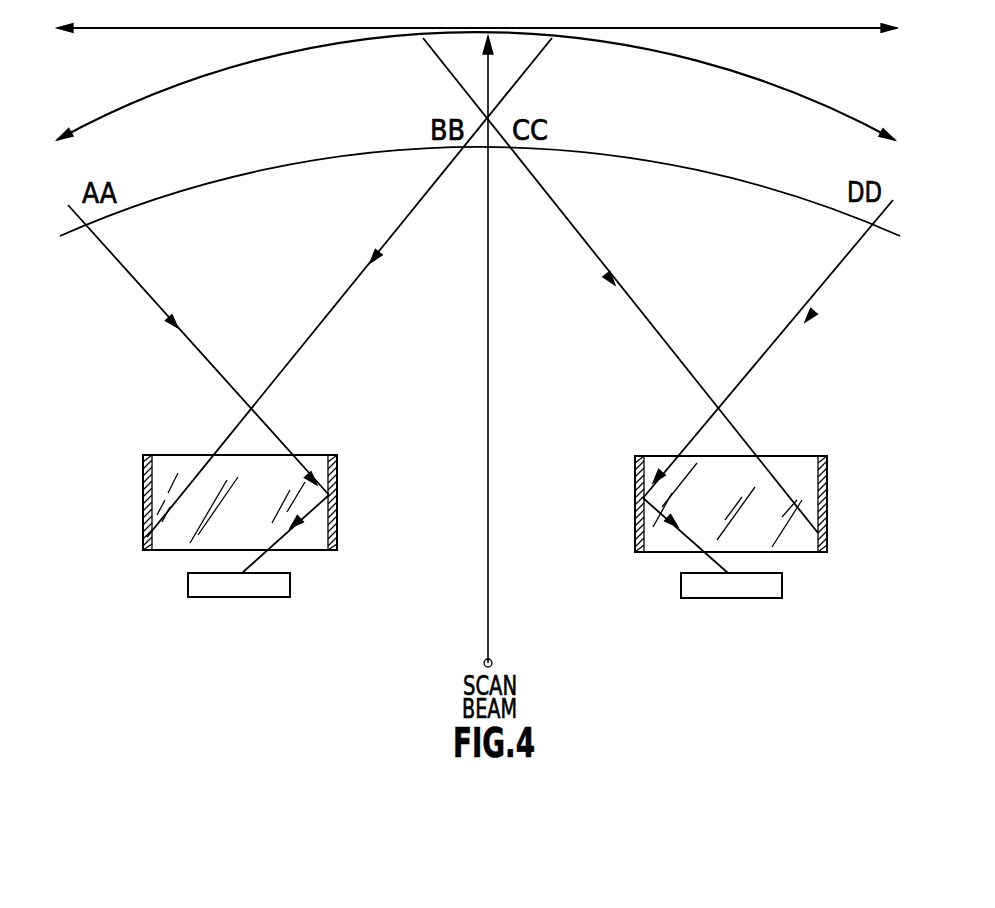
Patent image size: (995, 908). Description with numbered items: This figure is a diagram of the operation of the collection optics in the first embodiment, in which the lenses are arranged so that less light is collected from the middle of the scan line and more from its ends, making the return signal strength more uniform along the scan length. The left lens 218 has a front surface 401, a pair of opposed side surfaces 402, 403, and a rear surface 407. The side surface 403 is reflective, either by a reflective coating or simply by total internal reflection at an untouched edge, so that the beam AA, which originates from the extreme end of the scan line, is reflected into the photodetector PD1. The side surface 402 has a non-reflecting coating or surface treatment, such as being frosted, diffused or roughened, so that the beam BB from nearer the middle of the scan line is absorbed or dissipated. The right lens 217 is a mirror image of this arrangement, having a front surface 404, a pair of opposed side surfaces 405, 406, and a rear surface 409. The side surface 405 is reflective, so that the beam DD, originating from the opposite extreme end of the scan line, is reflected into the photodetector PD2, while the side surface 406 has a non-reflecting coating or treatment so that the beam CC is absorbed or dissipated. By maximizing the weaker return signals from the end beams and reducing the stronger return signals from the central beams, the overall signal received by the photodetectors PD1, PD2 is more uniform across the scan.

The right lens 217 is at (718, 512).
The left lens 218 is at (236, 515).
The front surface 401 is at (207, 455).
The side surface 402 is at (143, 548).
The side surface 403 is at (337, 550).
The front surface 404 is at (767, 455).
The side surface 405 is at (637, 532).
The side surface 406 is at (827, 552).
The rear surface 407 is at (173, 550).
The rear surface 409 is at (667, 553).
The photodetector PD1 is at (290, 597).
The photodetector PD2 is at (782, 598).